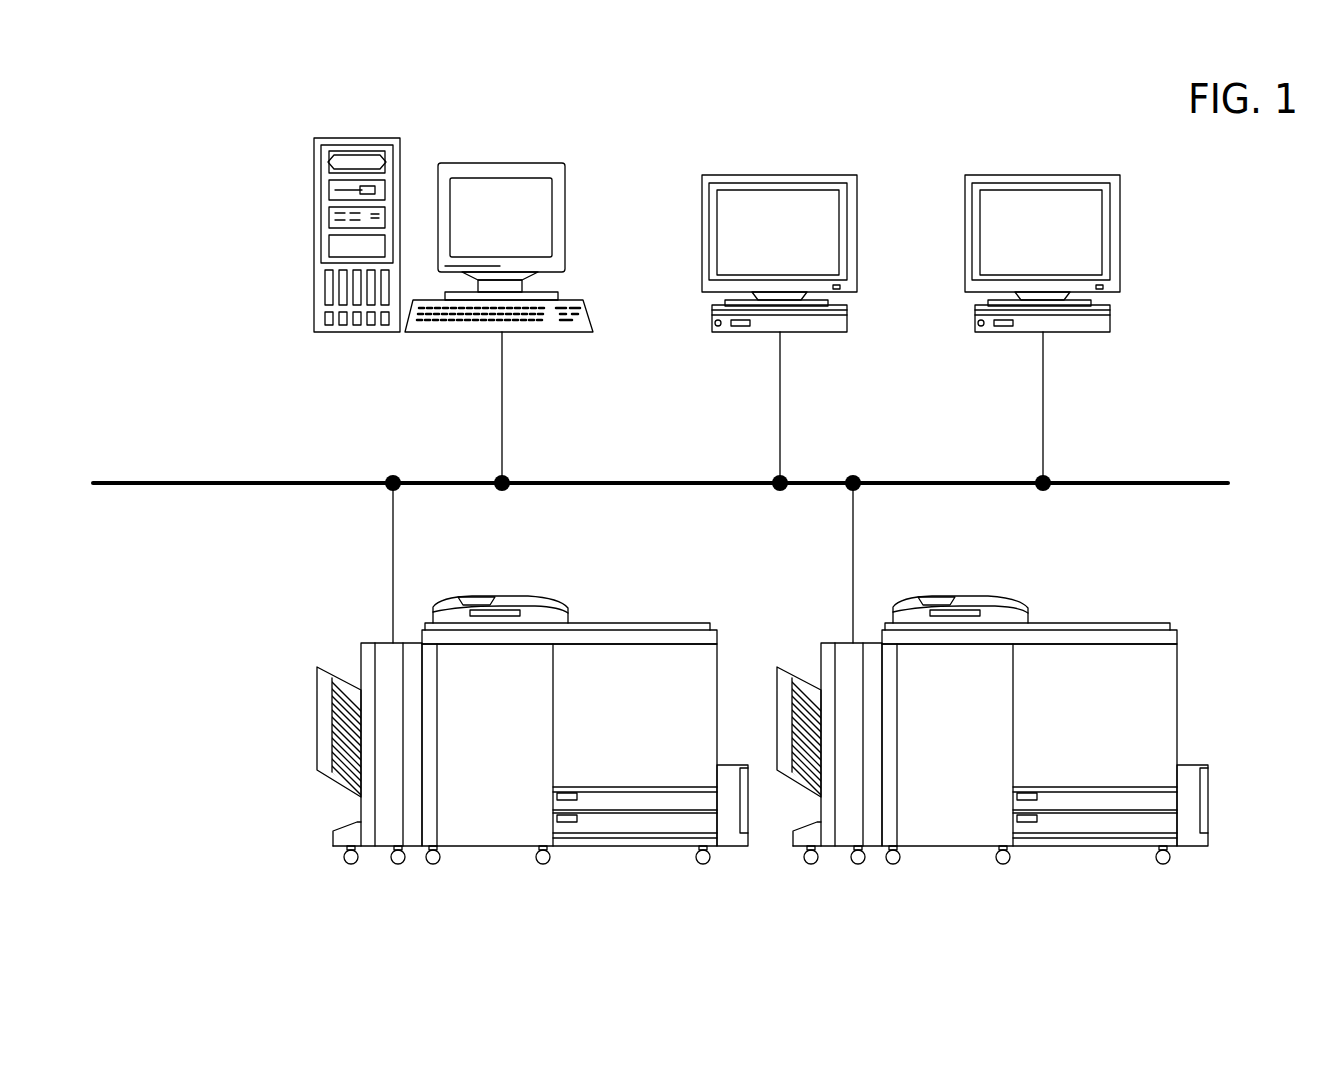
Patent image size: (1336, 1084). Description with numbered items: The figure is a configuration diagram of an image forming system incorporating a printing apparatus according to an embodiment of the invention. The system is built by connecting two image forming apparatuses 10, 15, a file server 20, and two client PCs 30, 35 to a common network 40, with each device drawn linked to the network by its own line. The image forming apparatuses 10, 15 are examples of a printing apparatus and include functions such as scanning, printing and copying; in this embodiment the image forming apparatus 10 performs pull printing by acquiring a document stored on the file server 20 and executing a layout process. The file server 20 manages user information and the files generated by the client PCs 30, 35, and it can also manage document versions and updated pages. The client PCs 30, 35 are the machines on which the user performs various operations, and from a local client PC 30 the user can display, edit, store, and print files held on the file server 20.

The image forming apparatus 10 is at (523, 595).
The image forming apparatus 15 is at (1068, 621).
The file server 20 is at (522, 333).
The client PC 30 is at (805, 333).
The client PC 35 is at (1083, 333).
The network 40 is at (148, 486).